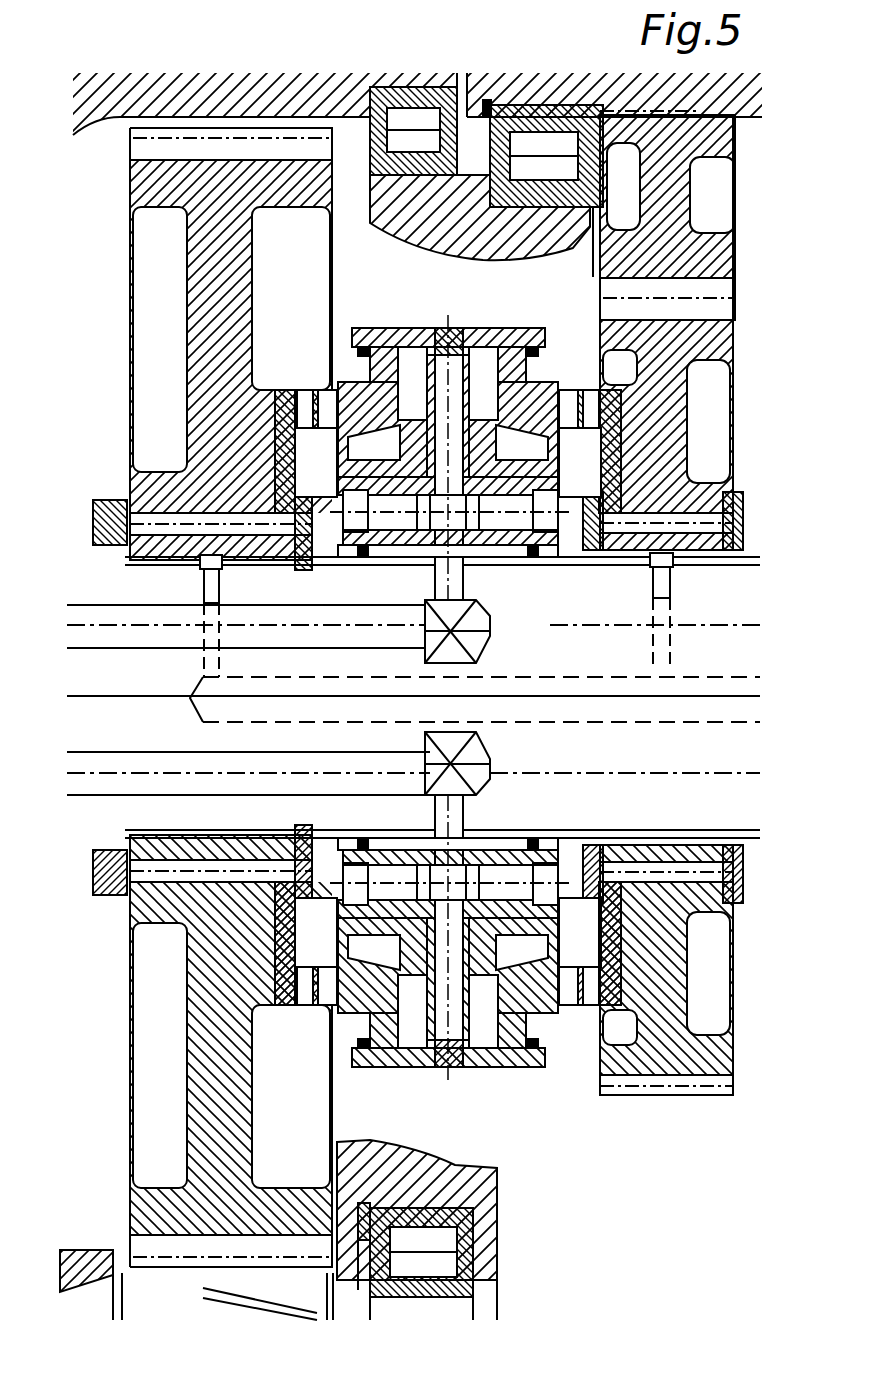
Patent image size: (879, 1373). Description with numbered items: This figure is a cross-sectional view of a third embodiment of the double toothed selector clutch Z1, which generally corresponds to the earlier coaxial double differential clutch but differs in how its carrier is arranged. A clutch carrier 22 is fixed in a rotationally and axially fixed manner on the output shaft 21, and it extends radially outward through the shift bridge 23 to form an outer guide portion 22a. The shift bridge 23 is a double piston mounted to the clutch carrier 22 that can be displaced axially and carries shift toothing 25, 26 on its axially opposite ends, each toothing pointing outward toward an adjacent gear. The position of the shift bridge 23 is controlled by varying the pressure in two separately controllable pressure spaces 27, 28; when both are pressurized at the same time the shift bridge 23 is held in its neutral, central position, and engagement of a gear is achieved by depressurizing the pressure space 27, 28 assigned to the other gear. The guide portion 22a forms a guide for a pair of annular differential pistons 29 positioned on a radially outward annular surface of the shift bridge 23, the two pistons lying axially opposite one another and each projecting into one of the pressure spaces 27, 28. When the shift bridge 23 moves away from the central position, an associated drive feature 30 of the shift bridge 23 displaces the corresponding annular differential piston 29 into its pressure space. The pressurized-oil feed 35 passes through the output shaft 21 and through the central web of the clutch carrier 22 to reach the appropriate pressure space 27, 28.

The double toothed selector clutch Z1 is at (456, 675).
The output shaft 21 is at (548, 644).
The clutch carrier 22 is at (505, 452).
The guide portion 22a is at (512, 338).
The shift bridge 23 is at (340, 455).
The shift toothing 25 is at (577, 392).
The shift toothing 26 is at (310, 390).
The pressure space 27 is at (518, 953).
The pressure space 28 is at (360, 955).
The annular differential piston 29 is at (383, 1060).
The drive feature 30 is at (335, 1015).
The pressurized-oil feed passage 35 is at (85, 612).